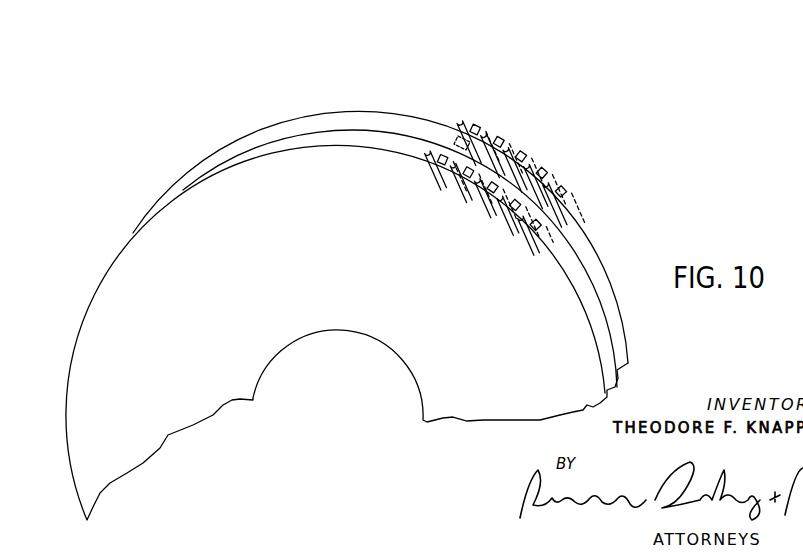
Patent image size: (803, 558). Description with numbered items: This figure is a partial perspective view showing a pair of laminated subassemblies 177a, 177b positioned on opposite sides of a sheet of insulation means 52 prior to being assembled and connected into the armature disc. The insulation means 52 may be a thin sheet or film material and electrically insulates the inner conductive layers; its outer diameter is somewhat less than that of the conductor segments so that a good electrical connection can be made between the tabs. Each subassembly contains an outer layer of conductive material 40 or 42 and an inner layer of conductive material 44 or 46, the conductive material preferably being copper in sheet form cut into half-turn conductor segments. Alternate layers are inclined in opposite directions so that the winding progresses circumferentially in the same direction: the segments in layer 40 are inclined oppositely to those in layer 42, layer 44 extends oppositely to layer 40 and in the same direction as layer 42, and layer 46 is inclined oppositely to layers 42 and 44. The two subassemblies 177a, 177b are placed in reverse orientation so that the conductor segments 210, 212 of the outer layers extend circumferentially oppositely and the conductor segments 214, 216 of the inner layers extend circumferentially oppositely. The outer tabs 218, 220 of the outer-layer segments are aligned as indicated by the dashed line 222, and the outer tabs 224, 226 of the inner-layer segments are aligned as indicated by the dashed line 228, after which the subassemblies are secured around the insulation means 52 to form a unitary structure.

The insulation means 52 is at (380, 212).
The subassembly 177a is at (266, 142).
The subassembly 177b is at (295, 118).
The outer tab 226 is at (467, 118).
The conductor segment 212 is at (458, 128).
The outer tab 220 is at (496, 132).
The dashed line 222 is at (491, 126).
The conductor segment 216 is at (523, 160).
The inner layer of conductive material 46 is at (560, 176).
The outer layer of conductive material 42 is at (573, 196).
The dashed line 228 is at (455, 141).
The outer tab 224 is at (437, 153).
The conductor segment 210 is at (444, 176).
The conductor segment 214 is at (455, 170).
The outer tab 218 is at (459, 187).
The outer layer of conductive material 40 is at (514, 228).
The inner layer of conductive material 44 is at (544, 246).